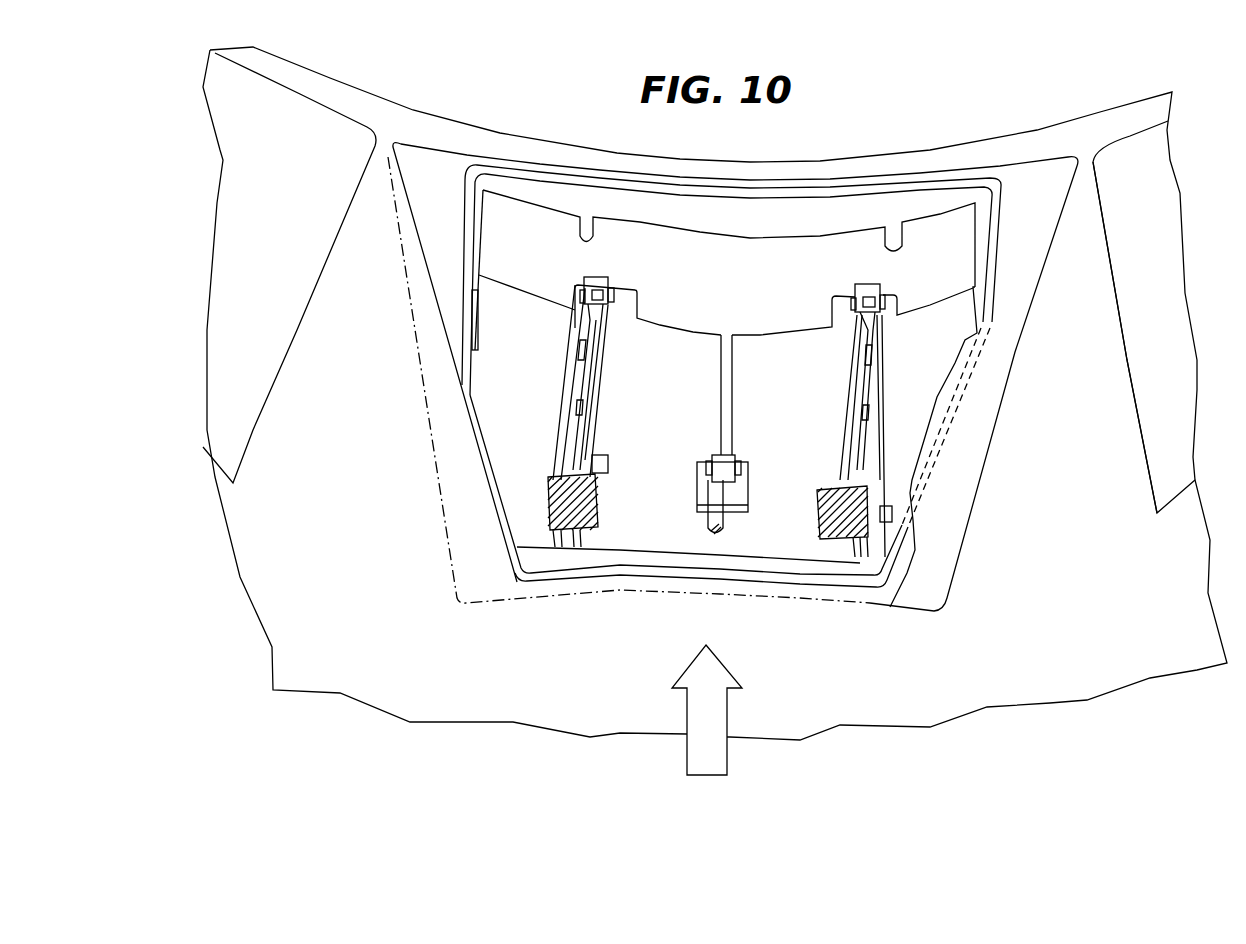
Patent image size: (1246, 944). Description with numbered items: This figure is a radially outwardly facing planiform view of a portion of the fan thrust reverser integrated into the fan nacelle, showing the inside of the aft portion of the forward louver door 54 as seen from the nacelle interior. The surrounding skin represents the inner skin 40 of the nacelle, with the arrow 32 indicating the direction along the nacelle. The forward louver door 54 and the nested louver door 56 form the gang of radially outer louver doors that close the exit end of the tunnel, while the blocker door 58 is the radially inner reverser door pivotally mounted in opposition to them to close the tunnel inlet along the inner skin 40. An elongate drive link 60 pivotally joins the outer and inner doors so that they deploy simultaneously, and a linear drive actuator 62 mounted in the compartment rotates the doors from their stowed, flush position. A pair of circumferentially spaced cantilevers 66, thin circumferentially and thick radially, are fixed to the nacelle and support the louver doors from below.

The air flow direction arrow 32 is at (728, 717).
The inner skin 40 is at (512, 681).
The forward louver door 54 is at (674, 436).
The louver door 56 is at (738, 293).
The blocker door 58 is at (1147, 357).
The drive link 60 is at (598, 394).
The linear drive actuator 62 is at (707, 520).
The cantilevers 66 is at (562, 417).